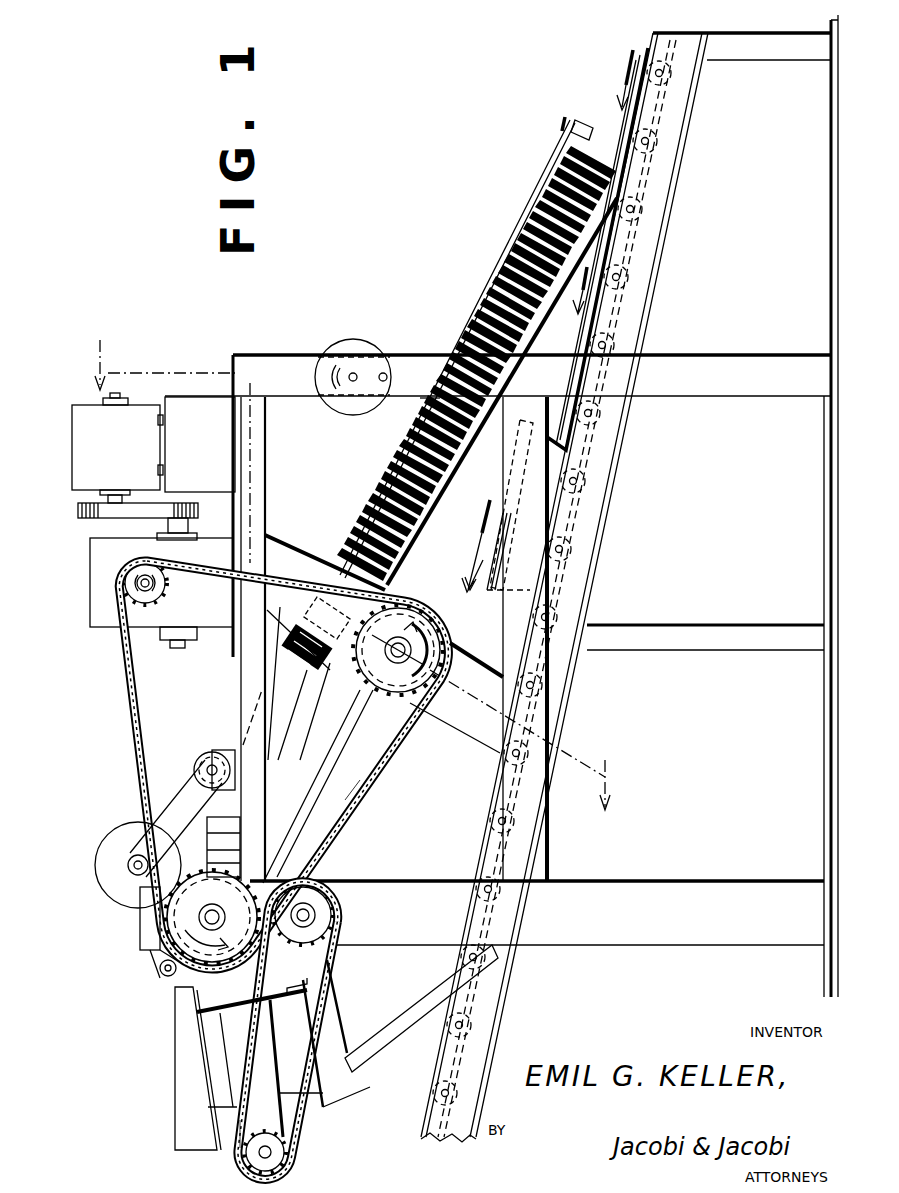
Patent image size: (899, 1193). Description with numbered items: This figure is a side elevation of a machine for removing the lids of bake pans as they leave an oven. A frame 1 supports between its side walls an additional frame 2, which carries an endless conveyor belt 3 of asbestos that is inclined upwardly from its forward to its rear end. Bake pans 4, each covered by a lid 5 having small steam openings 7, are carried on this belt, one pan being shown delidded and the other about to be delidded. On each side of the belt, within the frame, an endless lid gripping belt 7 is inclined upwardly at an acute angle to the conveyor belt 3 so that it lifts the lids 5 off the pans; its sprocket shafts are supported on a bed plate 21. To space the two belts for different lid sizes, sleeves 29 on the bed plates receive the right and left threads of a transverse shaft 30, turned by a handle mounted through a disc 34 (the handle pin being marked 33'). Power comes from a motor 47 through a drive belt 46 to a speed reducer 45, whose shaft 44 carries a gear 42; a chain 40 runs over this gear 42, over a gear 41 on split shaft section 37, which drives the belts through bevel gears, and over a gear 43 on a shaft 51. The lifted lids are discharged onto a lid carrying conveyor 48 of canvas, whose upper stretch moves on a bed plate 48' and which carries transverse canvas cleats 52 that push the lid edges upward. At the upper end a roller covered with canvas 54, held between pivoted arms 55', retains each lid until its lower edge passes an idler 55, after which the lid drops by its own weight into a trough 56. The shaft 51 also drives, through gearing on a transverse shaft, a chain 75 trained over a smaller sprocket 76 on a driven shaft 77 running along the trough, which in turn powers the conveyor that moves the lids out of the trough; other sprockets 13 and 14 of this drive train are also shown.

The frame 1 is at (789, 370).
The additional frame 2 is at (643, 308).
The endless conveyor belt 3 is at (361, 568).
The bake pan 4 is at (590, 257).
The lid 5 is at (560, 138).
The lid gripping belt 7 is at (479, 300).
The sprocket 13 is at (343, 920).
The lower chain drive 14 is at (323, 923).
The bed plate 21 is at (497, 425).
The sleeve 29 is at (430, 402).
The shaft 30 is at (353, 373).
The pin on disc 33' is at (375, 326).
The disc 34 is at (333, 368).
The split shaft section 37 is at (395, 672).
The chain 40 is at (330, 582).
The gear 41 is at (405, 687).
The gear 42 is at (117, 587).
The gear 43 is at (80, 500).
The shaft 44 is at (157, 593).
The speed reducer 45 is at (93, 617).
The drive belt 46 is at (137, 510).
The motor 47 is at (150, 490).
The lid carrying conveyor 48 is at (318, 786).
The bed plate 48' is at (234, 783).
The shaft 51 is at (213, 923).
The cleat 52 is at (332, 778).
The canvas covering 54 is at (122, 840).
The idler 55 is at (145, 937).
The pivoted arm 55' is at (190, 768).
The trough 56 is at (183, 1110).
The chain 75 is at (300, 1120).
The sprocket 76 is at (250, 1160).
The driven shaft 77 is at (275, 1152).